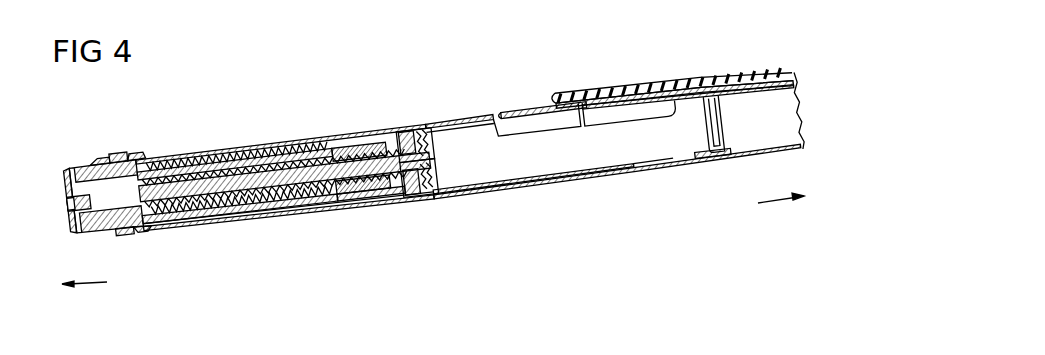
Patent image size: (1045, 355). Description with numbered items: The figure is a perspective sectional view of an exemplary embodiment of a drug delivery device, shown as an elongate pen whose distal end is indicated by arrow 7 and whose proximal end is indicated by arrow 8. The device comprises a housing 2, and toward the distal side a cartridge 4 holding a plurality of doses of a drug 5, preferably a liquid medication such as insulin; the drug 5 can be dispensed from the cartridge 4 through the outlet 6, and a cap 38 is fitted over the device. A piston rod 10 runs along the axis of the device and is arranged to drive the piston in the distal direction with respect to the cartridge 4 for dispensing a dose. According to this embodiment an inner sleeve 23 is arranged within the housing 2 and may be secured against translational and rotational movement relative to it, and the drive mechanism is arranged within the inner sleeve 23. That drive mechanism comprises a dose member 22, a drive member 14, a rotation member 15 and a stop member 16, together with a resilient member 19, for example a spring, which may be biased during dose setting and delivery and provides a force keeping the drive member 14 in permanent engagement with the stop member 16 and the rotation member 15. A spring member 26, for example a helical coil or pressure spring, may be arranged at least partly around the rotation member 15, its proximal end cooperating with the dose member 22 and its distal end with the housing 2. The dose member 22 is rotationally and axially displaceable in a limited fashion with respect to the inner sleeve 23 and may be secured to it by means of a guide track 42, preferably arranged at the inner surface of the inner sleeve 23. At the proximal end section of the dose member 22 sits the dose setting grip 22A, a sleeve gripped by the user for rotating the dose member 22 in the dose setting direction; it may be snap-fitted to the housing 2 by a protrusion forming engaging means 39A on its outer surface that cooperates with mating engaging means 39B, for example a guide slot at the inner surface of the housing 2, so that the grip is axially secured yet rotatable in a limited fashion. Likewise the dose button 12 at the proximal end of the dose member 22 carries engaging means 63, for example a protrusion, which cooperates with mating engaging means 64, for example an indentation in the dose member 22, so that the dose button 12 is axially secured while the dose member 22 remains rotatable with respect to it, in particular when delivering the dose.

The housing 2 is at (278, 140).
The cartridge 4 is at (628, 157).
The drug 5 is at (526, 105).
The outlet 6 is at (725, 124).
The distal end 7 is at (775, 204).
The proximal end 8 is at (100, 284).
The piston rod 10 is at (300, 162).
The dose button 12 is at (80, 231).
The drive member 14 is at (356, 142).
The rotation member 15 is at (272, 211).
The stop member 16 is at (392, 206).
The resilient member 19 is at (408, 132).
The dose member 22 is at (170, 228).
The dose setting grip 22A is at (100, 163).
The inner sleeve 23 is at (356, 212).
The spring member 26 is at (246, 152).
The cap 38 is at (672, 77).
The engaging means 39A is at (145, 160).
The engaging means 39B is at (128, 160).
The guide track 42 is at (204, 232).
The engaging means 63 is at (74, 205).
The engaging means 64 is at (70, 188).